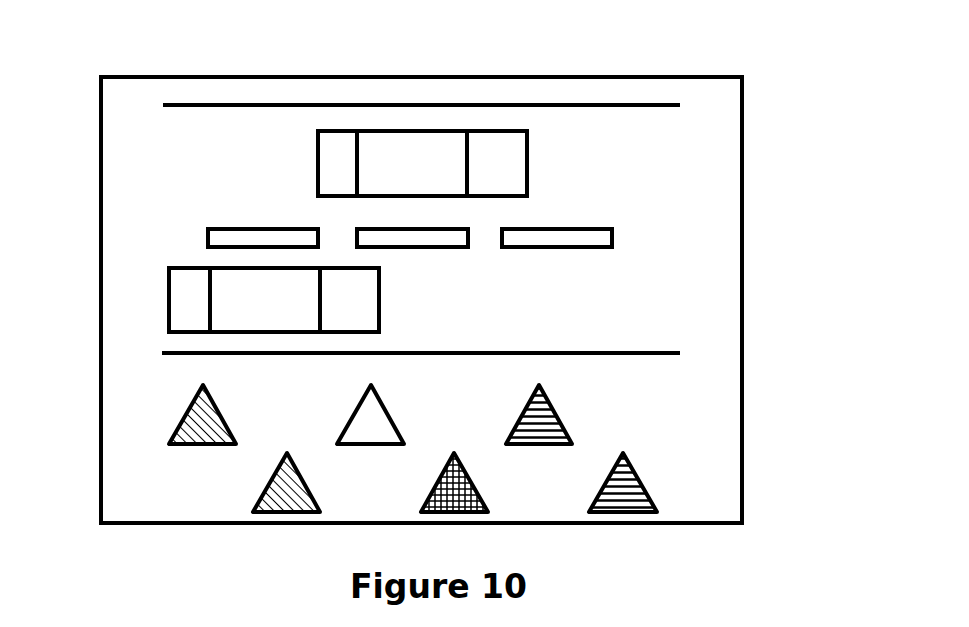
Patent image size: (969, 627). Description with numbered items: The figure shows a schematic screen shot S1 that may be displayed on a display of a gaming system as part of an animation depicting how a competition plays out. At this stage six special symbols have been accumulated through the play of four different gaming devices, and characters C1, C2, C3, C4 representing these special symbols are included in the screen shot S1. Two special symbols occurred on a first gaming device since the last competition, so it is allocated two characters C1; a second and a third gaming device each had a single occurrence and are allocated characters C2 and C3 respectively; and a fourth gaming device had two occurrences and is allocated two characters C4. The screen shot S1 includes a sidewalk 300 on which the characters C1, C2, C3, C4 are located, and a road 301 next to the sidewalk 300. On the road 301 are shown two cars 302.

The sidewalk 300 is at (703, 450).
The road 301 is at (703, 245).
The cars 302 is at (332, 173).
The characters C1 is at (177, 435).
The character C2 is at (345, 435).
The character C3 is at (430, 500).
The characters C4 is at (517, 435).
The screen shot S1 is at (203, 521).